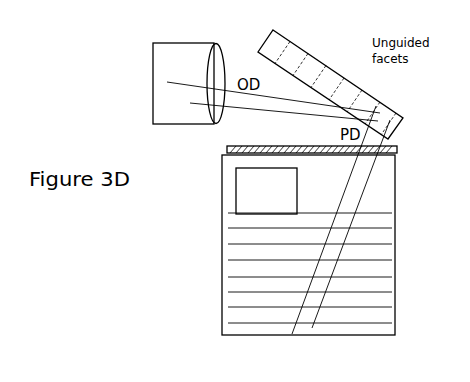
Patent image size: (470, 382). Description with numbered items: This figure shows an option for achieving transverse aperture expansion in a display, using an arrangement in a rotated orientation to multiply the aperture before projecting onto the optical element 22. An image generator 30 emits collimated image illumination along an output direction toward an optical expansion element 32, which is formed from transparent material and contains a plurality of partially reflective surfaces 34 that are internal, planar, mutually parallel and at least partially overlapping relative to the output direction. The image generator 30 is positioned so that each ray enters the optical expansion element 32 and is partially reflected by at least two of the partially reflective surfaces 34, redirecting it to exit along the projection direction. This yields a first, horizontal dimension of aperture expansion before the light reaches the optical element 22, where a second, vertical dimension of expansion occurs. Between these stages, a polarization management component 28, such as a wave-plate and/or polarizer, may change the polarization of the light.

The image generator 30 is at (189, 83).
The optical expansion element 32 is at (330, 79).
The partially reflective surfaces 34 is at (328, 75).
The polarization management component 28 is at (400, 150).
The optical element 22 is at (266, 191).